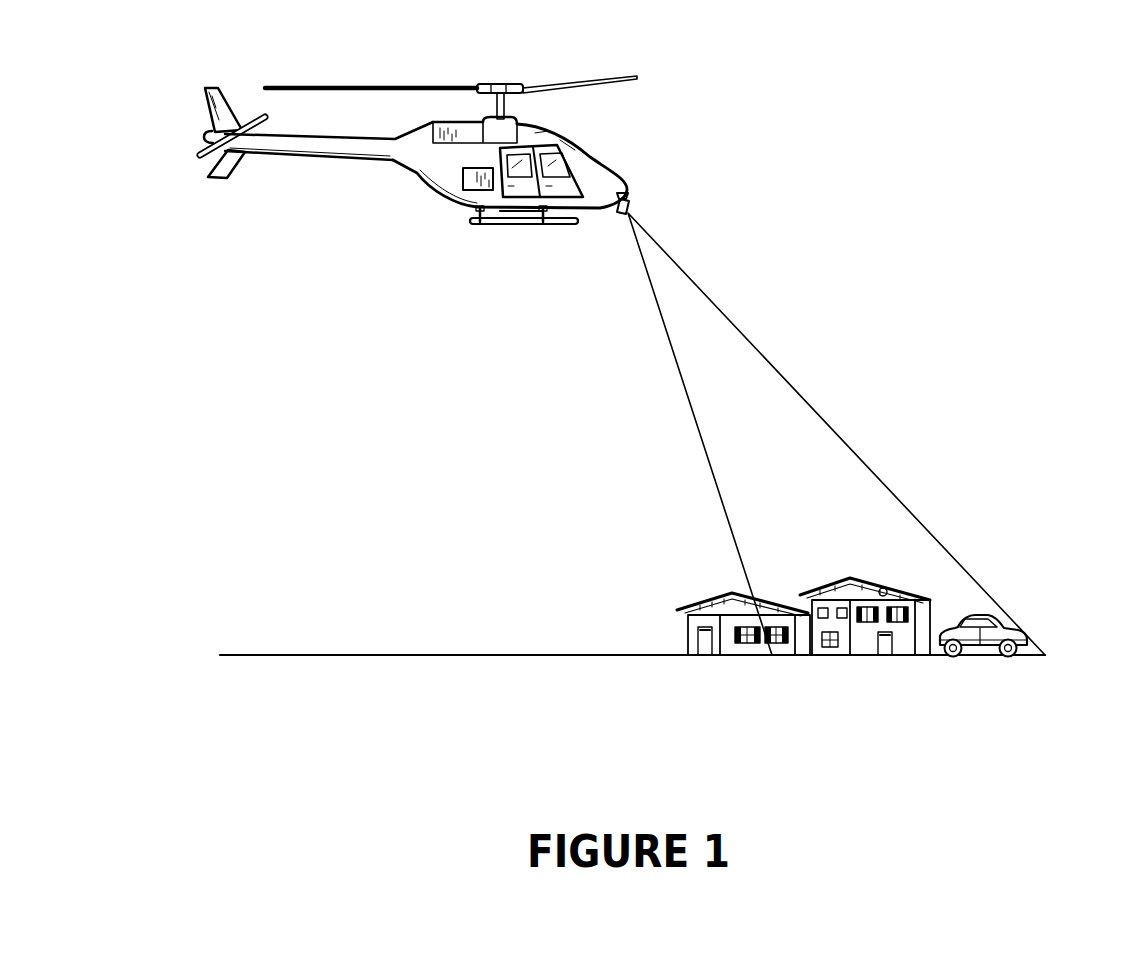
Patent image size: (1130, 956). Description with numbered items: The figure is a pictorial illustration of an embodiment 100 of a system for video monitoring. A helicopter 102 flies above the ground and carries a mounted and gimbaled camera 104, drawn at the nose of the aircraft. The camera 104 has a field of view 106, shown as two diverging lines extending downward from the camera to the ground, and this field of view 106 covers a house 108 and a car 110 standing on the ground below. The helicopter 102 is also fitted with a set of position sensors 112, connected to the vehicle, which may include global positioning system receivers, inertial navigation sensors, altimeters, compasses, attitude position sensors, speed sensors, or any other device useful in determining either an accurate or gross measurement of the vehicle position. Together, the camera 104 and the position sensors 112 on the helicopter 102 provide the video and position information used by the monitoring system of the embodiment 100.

The embodiment 100 is at (391, 668).
The helicopter 102 is at (588, 157).
The camera 104 is at (627, 202).
The field of view 106 is at (842, 325).
The house 108 is at (897, 583).
The car 110 is at (1002, 627).
The position sensors 112 is at (471, 183).